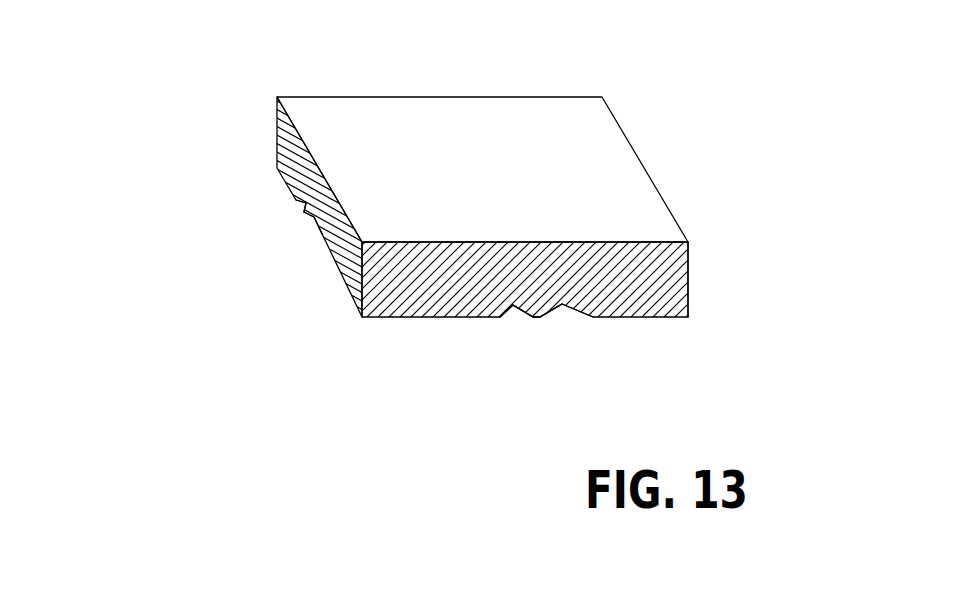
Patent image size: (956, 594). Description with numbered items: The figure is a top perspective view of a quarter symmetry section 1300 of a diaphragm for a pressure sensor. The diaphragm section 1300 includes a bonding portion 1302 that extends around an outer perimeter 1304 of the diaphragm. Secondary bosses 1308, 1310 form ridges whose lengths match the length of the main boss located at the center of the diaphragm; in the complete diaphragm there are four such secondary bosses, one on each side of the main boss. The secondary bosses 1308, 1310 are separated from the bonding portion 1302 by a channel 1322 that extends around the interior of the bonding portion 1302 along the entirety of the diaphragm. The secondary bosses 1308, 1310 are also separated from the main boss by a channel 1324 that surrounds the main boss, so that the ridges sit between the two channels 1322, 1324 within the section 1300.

The quarter symmetry section 1300 is at (660, 97).
The bonding portion 1302 is at (662, 318).
The outer perimeter 1304 is at (688, 267).
The secondary boss 1308 is at (307, 218).
The secondary boss 1310 is at (532, 315).
The channel 1322 is at (305, 203).
The channel 1324 is at (317, 223).